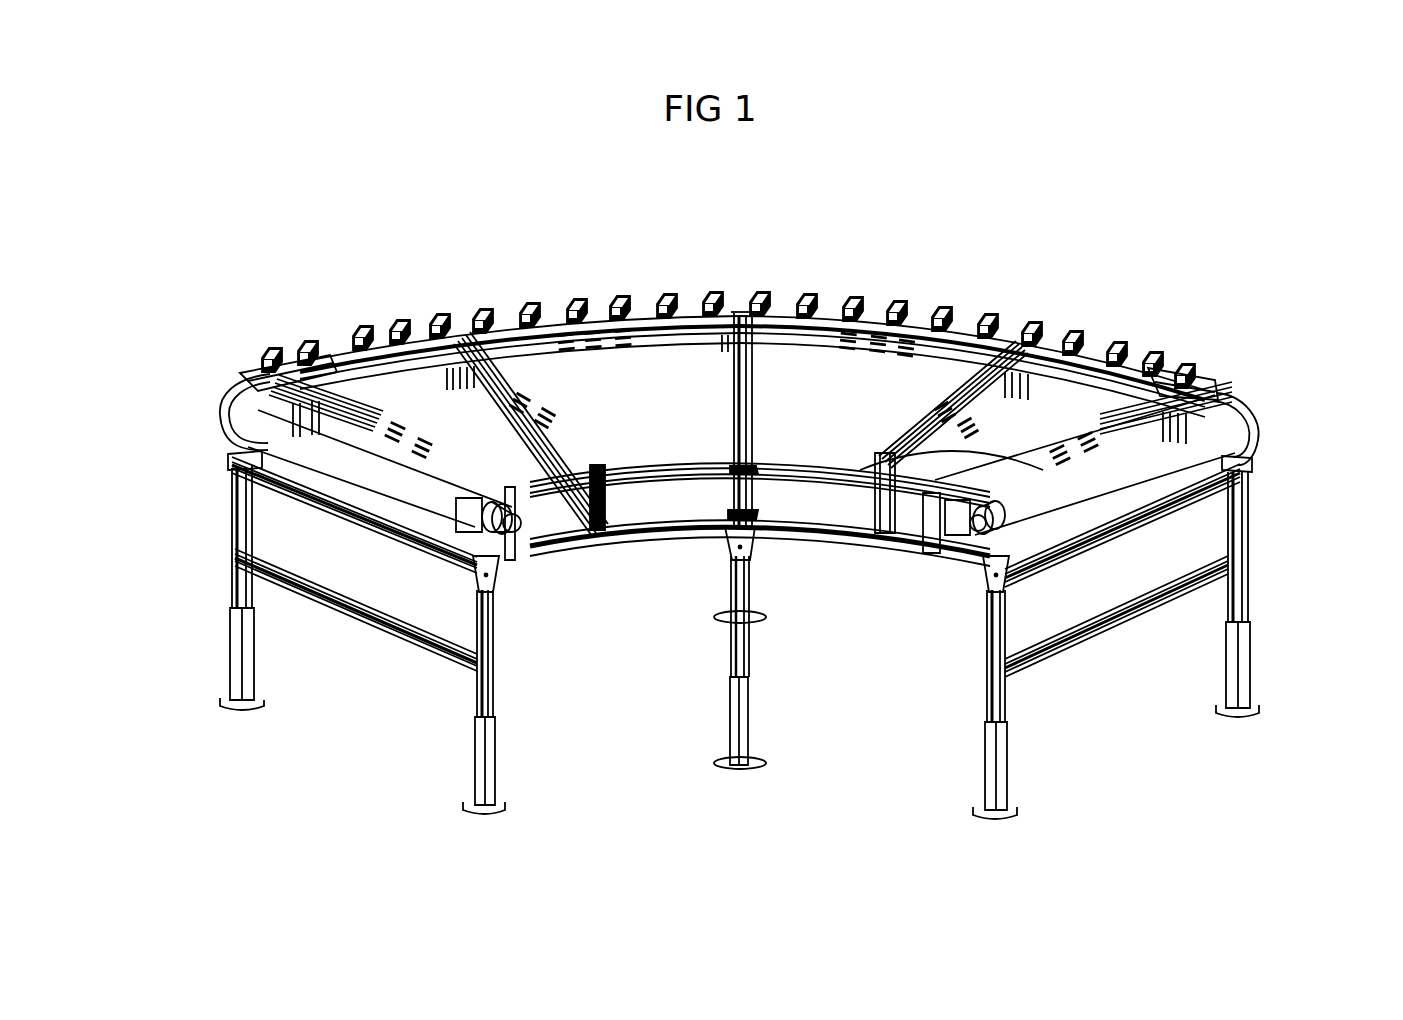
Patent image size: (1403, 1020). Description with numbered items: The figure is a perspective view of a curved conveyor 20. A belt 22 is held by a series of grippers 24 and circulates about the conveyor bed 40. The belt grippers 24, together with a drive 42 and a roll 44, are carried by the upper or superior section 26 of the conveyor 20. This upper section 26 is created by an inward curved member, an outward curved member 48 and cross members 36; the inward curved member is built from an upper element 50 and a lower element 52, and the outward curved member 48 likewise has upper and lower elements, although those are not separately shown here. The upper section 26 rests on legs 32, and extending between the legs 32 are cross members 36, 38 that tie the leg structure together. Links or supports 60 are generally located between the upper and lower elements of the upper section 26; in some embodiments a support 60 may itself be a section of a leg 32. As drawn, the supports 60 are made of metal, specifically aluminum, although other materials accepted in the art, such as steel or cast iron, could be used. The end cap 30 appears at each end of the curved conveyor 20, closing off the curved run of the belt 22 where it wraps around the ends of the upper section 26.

The conveyor 20 is at (547, 298).
The belt 22 is at (680, 318).
The grippers 24 is at (805, 302).
The upper section 26 is at (1080, 367).
The end cap 30 is at (1267, 467).
The legs 32 is at (252, 528).
The cross members 36 is at (360, 345).
The cross members 38 is at (1172, 580).
The conveyor bed 40 is at (775, 462).
The drive 42 is at (1243, 427).
The roll 44 is at (280, 425).
The outward curved member 48 is at (598, 322).
The upper element 50 is at (850, 545).
The lower element 52 is at (663, 480).
The supports 60 is at (752, 545).